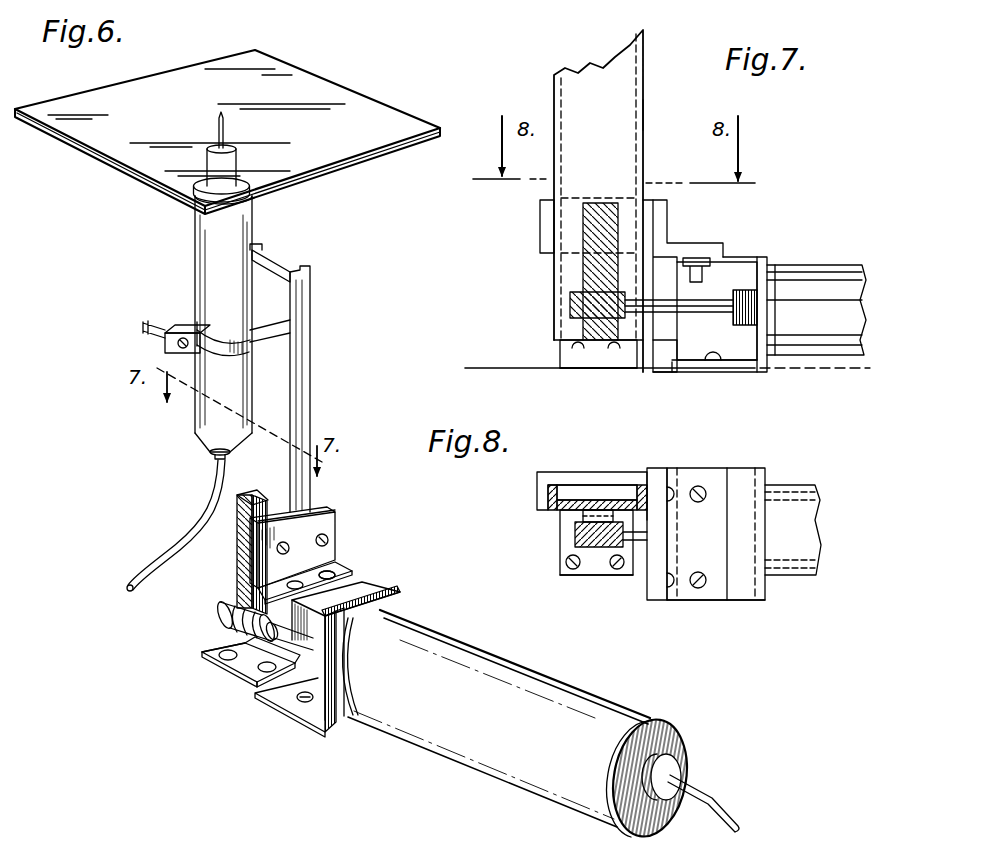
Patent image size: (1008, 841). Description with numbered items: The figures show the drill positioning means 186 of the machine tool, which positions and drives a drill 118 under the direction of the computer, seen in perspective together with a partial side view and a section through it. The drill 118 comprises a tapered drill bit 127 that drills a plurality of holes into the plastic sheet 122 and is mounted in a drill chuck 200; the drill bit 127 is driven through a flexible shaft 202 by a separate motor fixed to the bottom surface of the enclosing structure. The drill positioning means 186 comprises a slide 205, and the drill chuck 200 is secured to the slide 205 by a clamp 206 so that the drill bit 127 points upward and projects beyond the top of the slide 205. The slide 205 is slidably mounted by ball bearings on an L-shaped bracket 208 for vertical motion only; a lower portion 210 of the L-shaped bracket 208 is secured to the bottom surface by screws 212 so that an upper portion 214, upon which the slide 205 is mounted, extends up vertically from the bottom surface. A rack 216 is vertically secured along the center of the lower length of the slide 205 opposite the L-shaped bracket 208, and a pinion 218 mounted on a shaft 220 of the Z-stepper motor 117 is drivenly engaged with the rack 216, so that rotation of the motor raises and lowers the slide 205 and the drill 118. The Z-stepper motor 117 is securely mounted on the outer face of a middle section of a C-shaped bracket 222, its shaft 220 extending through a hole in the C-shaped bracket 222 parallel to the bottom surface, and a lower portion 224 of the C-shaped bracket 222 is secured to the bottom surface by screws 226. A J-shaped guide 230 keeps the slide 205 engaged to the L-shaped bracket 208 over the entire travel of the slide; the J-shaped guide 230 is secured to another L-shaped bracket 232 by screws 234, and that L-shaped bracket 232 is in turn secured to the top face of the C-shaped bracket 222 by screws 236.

In FIG. 6, the Z-stepper motor 117 is at (588, 702).
In FIG. 7, the Z-stepper motor 117 is at (830, 280).
In FIG. 8, the Z-stepper motor 117 is at (800, 495).
In FIG. 6, the drill 118 is at (256, 221).
In FIG. 6, the plastic sheet 122 is at (388, 112).
In FIG. 6, the tapered drill bit 127 is at (217, 125).
In FIG. 6, the drill positioning means 186 is at (222, 668).
In FIG. 7, the drill positioning means 186 is at (648, 128).
In FIG. 8, the drill positioning means 186 is at (610, 478).
In FIG. 6, the drill chuck 200 is at (222, 270).
In FIG. 6, the flexible shaft 202 is at (165, 515).
In FIG. 6, the slide 205 is at (302, 432).
In FIG. 7, the slide 205 is at (630, 85).
In FIG. 8, the slide 205 is at (550, 513).
In FIG. 6, the clamp 206 is at (282, 332).
In FIG. 6, the L-shaped bracket 208 is at (250, 690).
In FIG. 7, the L-shaped bracket 208 is at (570, 372).
In FIG. 6, the lower portion 210 is at (222, 632).
In FIG. 7, the lower portion 210 is at (565, 362).
In FIG. 8, the lower portion 210 is at (603, 572).
In FIG. 6, the screws 212 is at (205, 655).
In FIG. 7, the screws 212 is at (606, 362).
In FIG. 8, the screws 212 is at (570, 572).
In FIG. 8, the upper portion 214 is at (565, 487).
In FIG. 6, the rack 216 is at (258, 493).
In FIG. 7, the rack 216 is at (583, 268).
In FIG. 6, the pinion 218 is at (218, 605).
In FIG. 7, the pinion 218 is at (572, 302).
In FIG. 8, the pinion 218 is at (578, 530).
In FIG. 6, the shaft 220 is at (380, 596).
In FIG. 7, the shaft 220 is at (668, 322).
In FIG. 8, the shaft 220 is at (640, 542).
In FIG. 6, the C-shaped bracket 222 is at (330, 736).
In FIG. 7, the C-shaped bracket 222 is at (768, 262).
In FIG. 8, the C-shaped bracket 222 is at (740, 482).
In FIG. 6, the lower portion 224 is at (255, 700).
In FIG. 7, the lower portion 224 is at (742, 368).
In FIG. 6, the screws 226 is at (303, 705).
In FIG. 7, the screws 226 is at (712, 366).
In FIG. 6, the J-shaped guide 230 is at (320, 502).
In FIG. 7, the J-shaped guide 230 is at (540, 232).
In FIG. 6, the L-shaped bracket 232 is at (335, 548).
In FIG. 8, the L-shaped bracket 232 is at (715, 602).
In FIG. 6, the screws 234 is at (332, 518).
In FIG. 7, the screws 234 is at (670, 222).
In FIG. 8, the screws 234 is at (657, 482).
In FIG. 6, the screws 236 is at (345, 572).
In FIG. 7, the screws 236 is at (703, 242).
In FIG. 8, the screws 236 is at (700, 486).